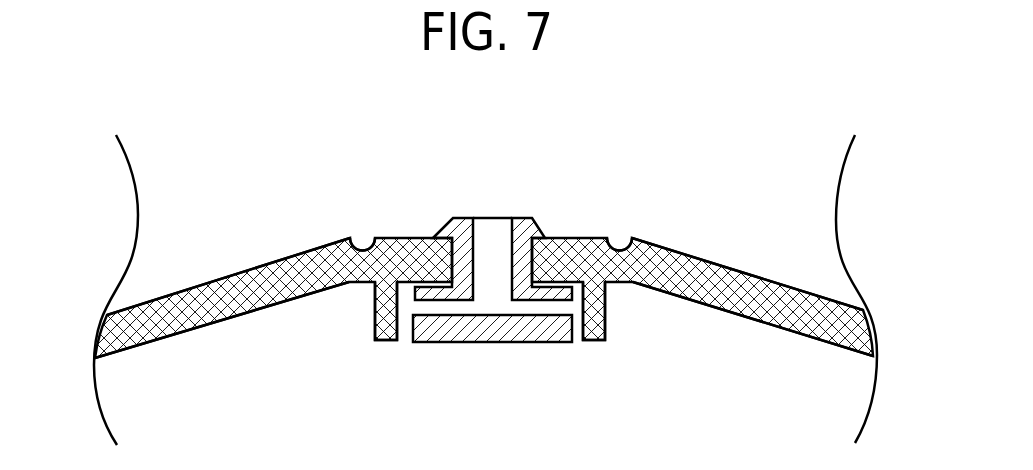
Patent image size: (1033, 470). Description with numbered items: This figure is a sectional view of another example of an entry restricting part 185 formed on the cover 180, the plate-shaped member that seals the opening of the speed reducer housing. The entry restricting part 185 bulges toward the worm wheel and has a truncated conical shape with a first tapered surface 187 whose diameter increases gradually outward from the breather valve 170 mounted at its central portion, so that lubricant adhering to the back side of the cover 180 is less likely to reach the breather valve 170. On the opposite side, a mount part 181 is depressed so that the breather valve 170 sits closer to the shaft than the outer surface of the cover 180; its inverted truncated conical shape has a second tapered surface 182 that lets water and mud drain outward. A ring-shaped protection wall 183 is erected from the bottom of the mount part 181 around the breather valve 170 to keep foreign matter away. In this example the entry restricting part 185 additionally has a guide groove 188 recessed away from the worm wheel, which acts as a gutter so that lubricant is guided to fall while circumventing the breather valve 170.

The breather valve 170 is at (492, 345).
The cover 180 is at (760, 323).
The mount part 181 is at (715, 316).
The second tapered surface 182 is at (230, 320).
The protection wall 183 is at (387, 342).
The entry restricting part 185 is at (706, 260).
The first tapered surface 187 is at (205, 284).
The guide groove 188 is at (362, 237).